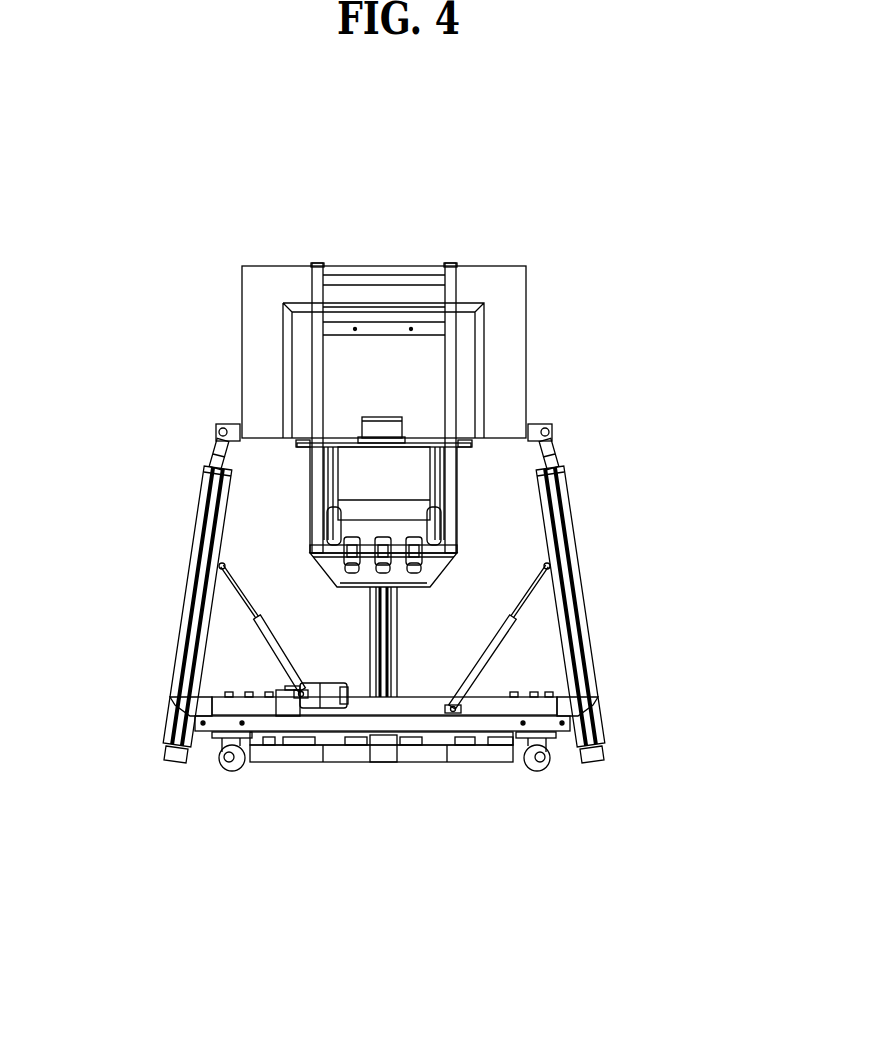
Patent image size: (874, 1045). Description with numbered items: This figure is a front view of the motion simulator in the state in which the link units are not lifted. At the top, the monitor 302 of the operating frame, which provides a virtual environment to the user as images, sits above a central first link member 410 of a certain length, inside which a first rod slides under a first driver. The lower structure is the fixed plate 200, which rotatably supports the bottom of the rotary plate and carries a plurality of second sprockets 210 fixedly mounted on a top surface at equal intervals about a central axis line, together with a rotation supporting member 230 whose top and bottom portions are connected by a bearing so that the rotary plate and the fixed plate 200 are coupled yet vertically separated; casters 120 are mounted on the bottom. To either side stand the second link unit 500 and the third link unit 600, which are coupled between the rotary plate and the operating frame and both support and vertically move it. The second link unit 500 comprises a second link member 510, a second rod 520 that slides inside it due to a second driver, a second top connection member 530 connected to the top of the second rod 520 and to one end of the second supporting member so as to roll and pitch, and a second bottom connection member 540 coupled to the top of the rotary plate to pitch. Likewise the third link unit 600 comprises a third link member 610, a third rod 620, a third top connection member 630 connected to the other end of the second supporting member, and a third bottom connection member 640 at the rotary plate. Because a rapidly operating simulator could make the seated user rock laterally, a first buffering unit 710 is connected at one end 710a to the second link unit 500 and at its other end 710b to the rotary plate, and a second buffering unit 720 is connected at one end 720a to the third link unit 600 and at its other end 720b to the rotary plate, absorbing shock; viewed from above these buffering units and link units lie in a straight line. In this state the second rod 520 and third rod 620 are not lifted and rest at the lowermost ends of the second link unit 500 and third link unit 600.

The monitor 302 is at (243, 297).
The first link member 410 is at (378, 602).
The fixed plate 200 is at (382, 771).
The second sprocket 210 is at (455, 762).
The rotation supporting member 230 is at (383, 762).
The caster 120 is at (232, 768).
The second link unit 500 is at (140, 591).
The second link member 510 is at (205, 522).
The second rod 520 is at (212, 460).
The second top connection member 530 is at (215, 432).
The second bottom connection member 540 is at (188, 712).
The third link unit 600 is at (616, 591).
The third link member 610 is at (572, 610).
The third rod 620 is at (560, 460).
The third top connection member 630 is at (548, 432).
The third bottom connection member 640 is at (592, 712).
The first buffering unit 710 is at (173, 633).
The first link upper joint 710a is at (220, 568).
The first link lower joint 710b is at (295, 703).
The second buffering unit 720 is at (608, 628).
The second link upper joint 720a is at (560, 562).
The second link lower joint 720b is at (452, 708).